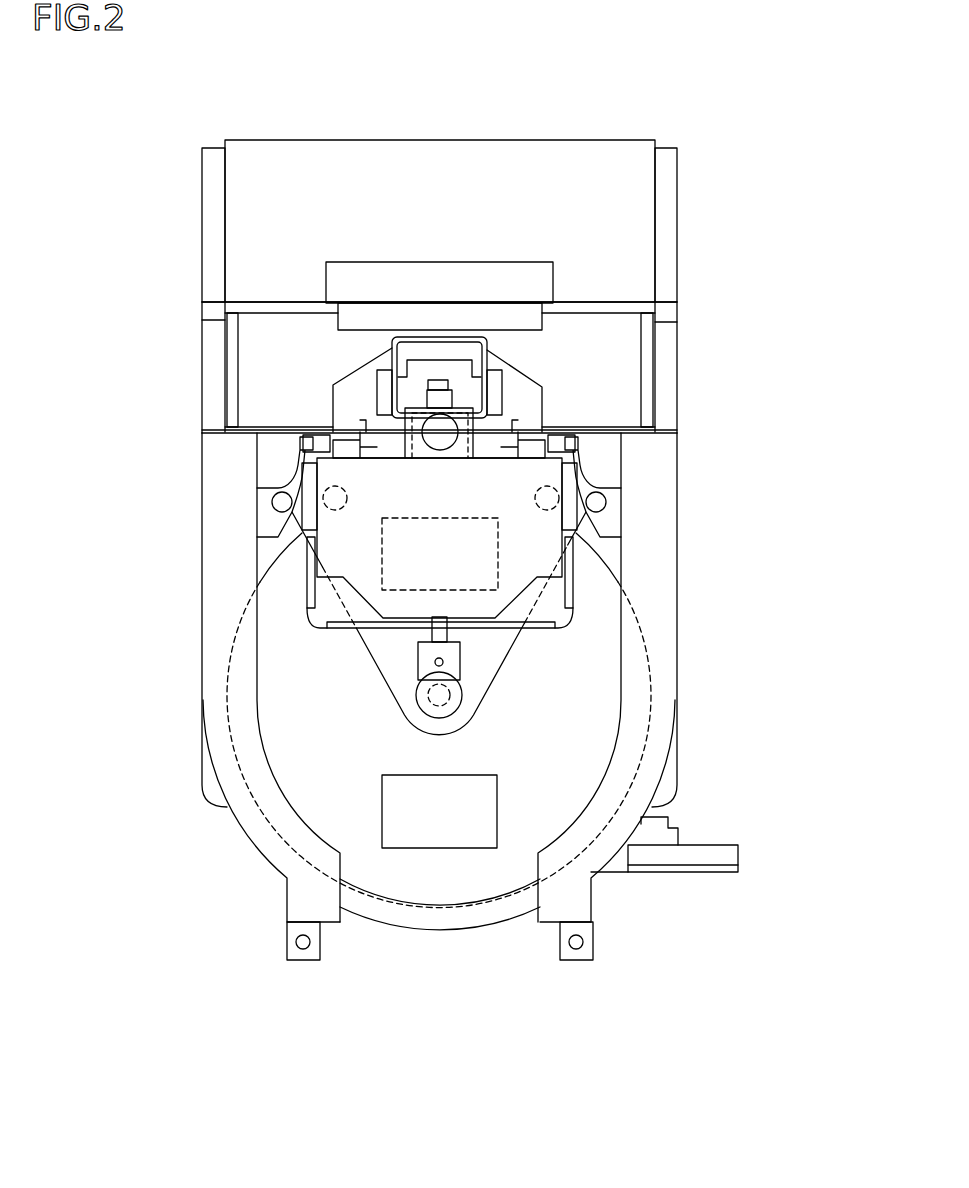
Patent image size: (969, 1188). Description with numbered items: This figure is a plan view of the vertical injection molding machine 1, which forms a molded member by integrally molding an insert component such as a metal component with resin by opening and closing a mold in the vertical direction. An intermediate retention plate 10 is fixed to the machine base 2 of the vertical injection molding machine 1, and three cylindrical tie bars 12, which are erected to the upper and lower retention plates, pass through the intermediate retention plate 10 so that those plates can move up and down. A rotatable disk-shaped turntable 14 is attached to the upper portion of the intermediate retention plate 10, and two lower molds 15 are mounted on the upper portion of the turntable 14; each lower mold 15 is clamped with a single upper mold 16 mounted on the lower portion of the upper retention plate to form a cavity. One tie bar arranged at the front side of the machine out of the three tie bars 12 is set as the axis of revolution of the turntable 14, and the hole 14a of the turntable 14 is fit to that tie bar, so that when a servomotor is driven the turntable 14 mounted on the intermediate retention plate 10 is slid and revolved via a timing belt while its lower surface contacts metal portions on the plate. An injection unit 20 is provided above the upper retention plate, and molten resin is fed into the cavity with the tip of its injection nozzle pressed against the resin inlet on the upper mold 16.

The vertical injection molding machine 1 is at (689, 273).
The machine base 2 is at (670, 357).
The intermediate retention plate 10 is at (517, 907).
The tie bars 12 is at (323, 488).
The turntable 14 is at (387, 883).
The hole 14a is at (412, 708).
The lower molds 15 is at (442, 843).
The upper mold 16 is at (498, 545).
The injection unit 20 is at (357, 550).